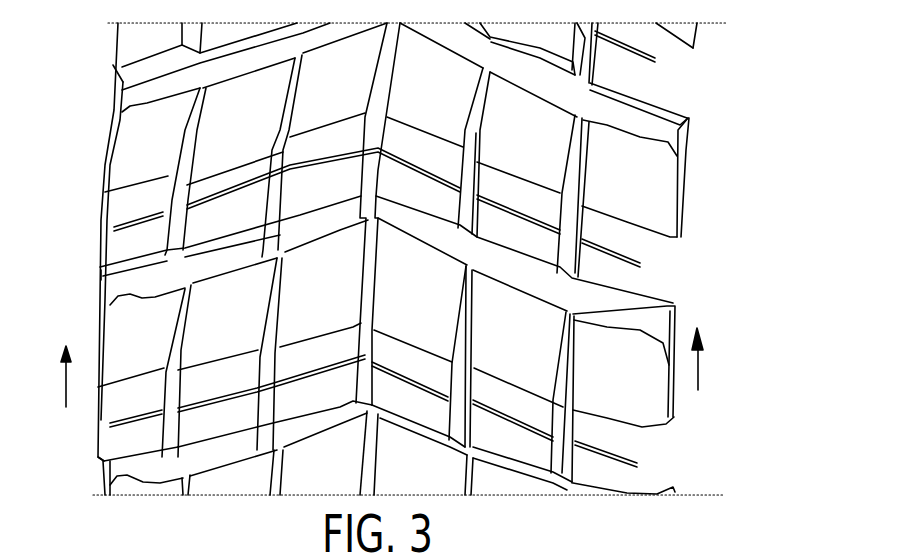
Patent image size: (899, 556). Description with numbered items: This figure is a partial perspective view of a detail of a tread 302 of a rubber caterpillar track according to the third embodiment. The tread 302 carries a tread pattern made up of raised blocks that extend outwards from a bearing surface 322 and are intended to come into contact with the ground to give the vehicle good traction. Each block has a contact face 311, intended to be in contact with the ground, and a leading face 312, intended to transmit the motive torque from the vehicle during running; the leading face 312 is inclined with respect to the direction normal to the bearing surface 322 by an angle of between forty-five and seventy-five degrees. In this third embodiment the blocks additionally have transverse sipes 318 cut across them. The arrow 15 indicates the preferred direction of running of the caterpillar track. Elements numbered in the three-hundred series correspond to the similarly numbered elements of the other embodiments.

The tread 302 is at (445, 259).
The contact face 311 is at (79, 260).
The leading face 312 is at (103, 140).
The transverse sipes 318 is at (327, 307).
The bearing surface 322 is at (126, 64).
The arrow 15 is at (733, 360).